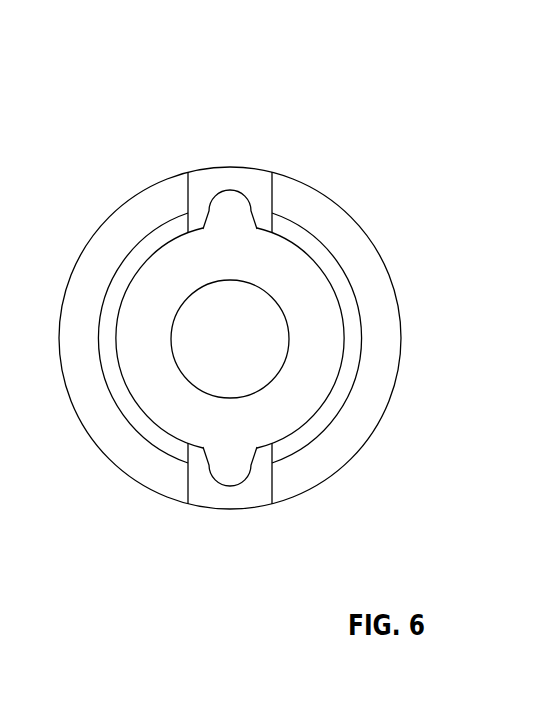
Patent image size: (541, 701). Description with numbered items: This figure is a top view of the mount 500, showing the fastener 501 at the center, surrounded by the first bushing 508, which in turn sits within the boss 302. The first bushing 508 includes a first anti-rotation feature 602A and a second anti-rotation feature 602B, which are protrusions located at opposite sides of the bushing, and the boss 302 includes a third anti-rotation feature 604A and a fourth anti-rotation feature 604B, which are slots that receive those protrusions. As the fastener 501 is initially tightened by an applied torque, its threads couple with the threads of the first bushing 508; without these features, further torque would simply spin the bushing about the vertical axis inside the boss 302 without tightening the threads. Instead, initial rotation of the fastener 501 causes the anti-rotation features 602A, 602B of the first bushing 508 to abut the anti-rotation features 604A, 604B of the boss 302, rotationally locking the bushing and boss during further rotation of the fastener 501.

The mount 500 is at (420, 59).
The boss 302 is at (372, 238).
The first bushing 508 is at (157, 250).
The fastener 501 is at (197, 388).
The first anti-rotation feature 602A is at (230, 190).
The second anti-rotation feature 602B is at (250, 481).
The third anti-rotation feature 604A is at (257, 166).
The fourth anti-rotation feature 604B is at (230, 510).